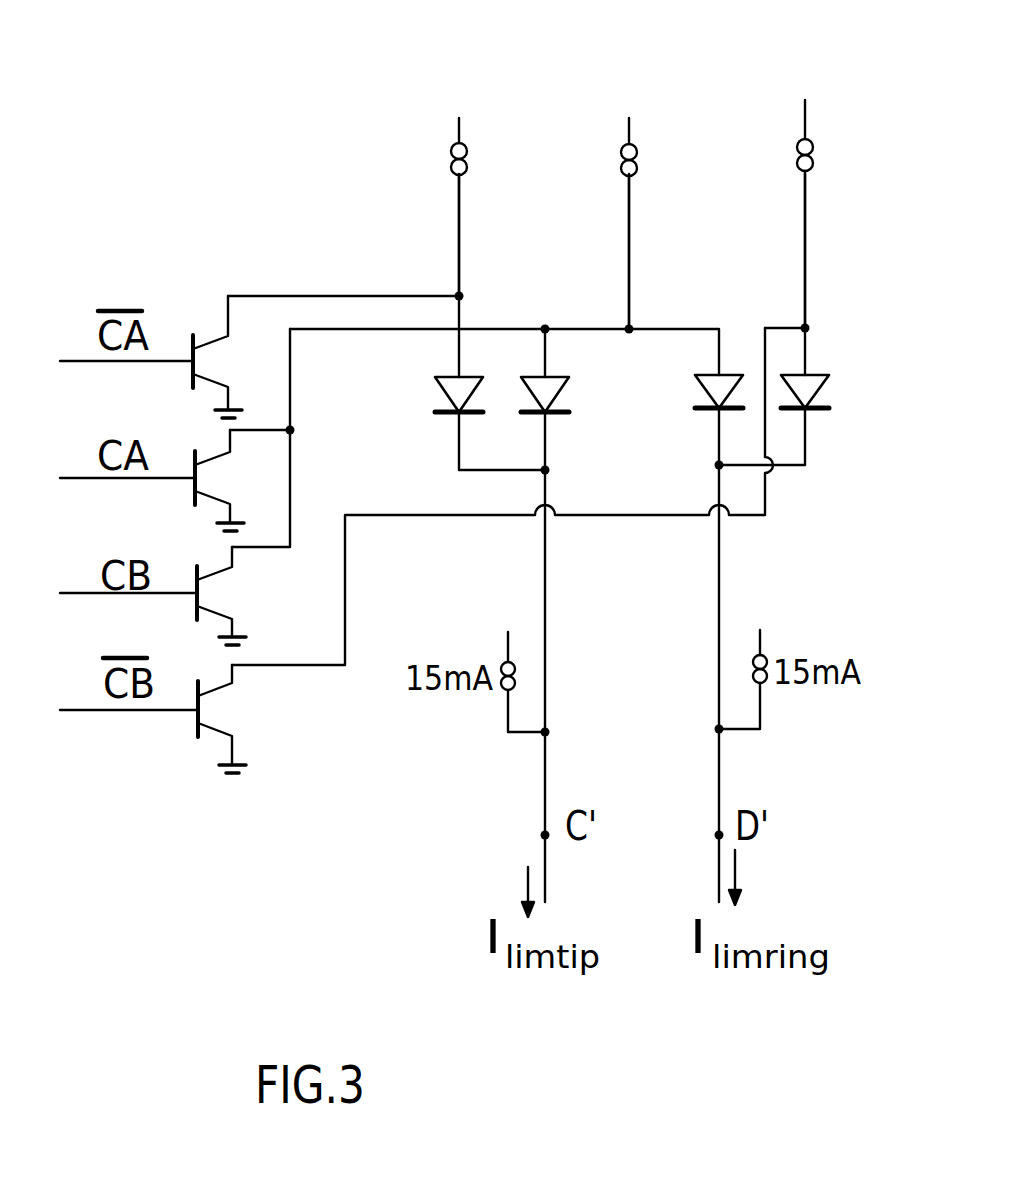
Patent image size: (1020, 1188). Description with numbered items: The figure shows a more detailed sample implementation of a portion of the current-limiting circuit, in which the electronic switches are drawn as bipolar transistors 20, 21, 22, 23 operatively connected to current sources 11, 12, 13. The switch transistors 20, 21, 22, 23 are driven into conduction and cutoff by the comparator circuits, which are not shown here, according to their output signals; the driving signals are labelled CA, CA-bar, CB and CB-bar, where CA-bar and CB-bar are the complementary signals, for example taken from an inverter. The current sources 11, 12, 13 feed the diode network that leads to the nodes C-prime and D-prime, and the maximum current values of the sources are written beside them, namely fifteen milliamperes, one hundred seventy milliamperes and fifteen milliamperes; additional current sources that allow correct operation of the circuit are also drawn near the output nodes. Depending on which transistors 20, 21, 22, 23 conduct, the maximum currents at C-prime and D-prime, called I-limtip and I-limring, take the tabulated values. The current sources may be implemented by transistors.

The 15 mA current source 11 is at (452, 150).
The 170 mA current source 12 is at (622, 150).
The 15 mA current source 13 is at (798, 148).
The transistor (CA-bar input) 20 is at (232, 350).
The transistor (CA input) 21 is at (234, 478).
The transistor (CB-bar input) 22 is at (222, 704).
The transistor (CB input) 23 is at (228, 594).